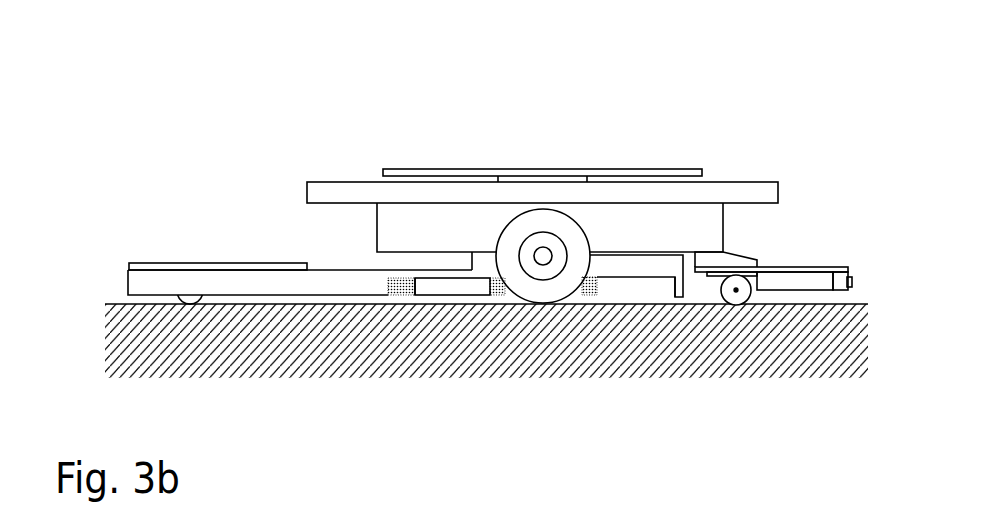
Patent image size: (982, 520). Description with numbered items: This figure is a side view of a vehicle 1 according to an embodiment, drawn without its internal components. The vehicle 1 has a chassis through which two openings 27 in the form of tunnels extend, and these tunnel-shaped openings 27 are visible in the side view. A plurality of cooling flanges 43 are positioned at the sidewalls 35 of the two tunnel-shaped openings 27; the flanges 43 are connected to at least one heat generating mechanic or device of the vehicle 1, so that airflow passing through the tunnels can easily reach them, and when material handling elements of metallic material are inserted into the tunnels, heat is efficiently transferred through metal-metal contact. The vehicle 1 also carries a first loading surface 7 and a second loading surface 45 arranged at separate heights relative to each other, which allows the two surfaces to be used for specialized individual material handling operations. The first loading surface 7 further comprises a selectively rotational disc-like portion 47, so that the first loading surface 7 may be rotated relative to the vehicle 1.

The vehicle 1 is at (333, 78).
The first loading surface 7 is at (741, 163).
The openings 27 is at (455, 291).
The sidewalls 35 is at (413, 295).
The cooling flanges 43 is at (407, 282).
The second loading surface 45 is at (142, 263).
The rotational disc-like portion 47 is at (528, 169).